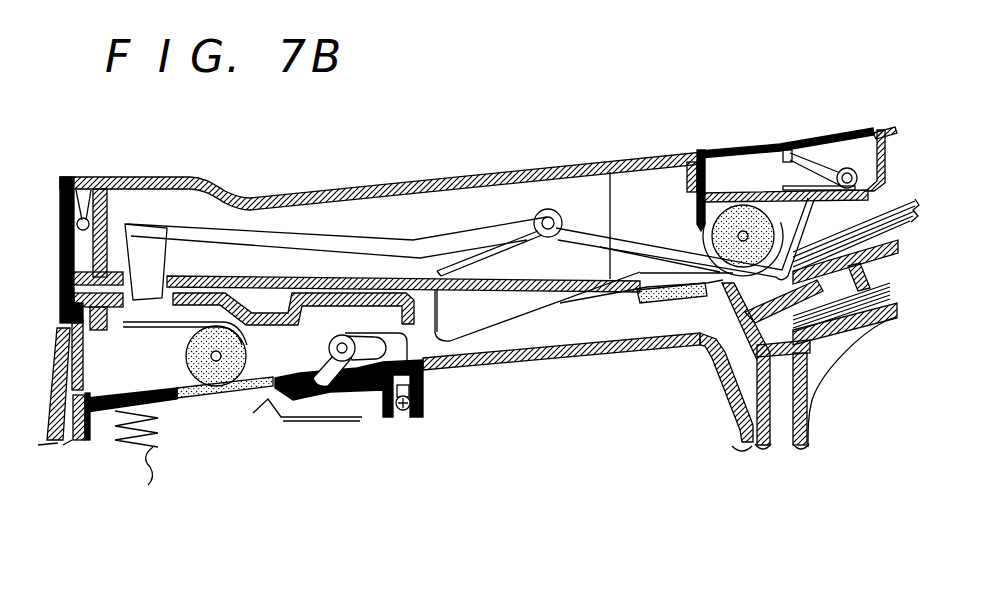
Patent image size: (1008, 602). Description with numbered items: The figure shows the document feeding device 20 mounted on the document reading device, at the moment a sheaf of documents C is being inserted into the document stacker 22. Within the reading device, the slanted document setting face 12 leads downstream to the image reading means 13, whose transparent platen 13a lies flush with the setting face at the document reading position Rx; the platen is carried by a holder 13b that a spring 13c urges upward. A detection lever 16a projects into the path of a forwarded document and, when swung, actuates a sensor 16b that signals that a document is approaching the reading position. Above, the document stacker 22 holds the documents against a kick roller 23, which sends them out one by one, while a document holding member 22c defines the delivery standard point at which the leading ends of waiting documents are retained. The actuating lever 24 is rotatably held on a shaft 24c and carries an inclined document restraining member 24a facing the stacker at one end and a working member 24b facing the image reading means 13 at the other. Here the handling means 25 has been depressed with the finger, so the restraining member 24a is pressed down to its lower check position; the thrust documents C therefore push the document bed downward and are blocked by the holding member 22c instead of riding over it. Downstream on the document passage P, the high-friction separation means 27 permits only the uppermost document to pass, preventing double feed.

The document setting face 12 is at (500, 342).
The image reading means 13 is at (303, 512).
The transparent platen 13a is at (216, 425).
The holder 13b is at (233, 450).
The spring 13c is at (141, 467).
The detection lever 16a is at (350, 397).
The sensor 16b is at (382, 403).
The document feeding device 20 is at (594, 140).
The document stacker 22 is at (887, 380).
The document holding member 22c is at (740, 322).
The kick roller 23 is at (730, 210).
The actuating lever 24 is at (372, 245).
The document restraining member 24a is at (760, 205).
The working member 24b is at (153, 250).
The shaft 24c is at (518, 212).
The handling means 25 is at (810, 142).
The separation means 27 is at (650, 302).
The document C is at (897, 195).
The document passage P is at (527, 330).
The document reading position Rx is at (221, 392).